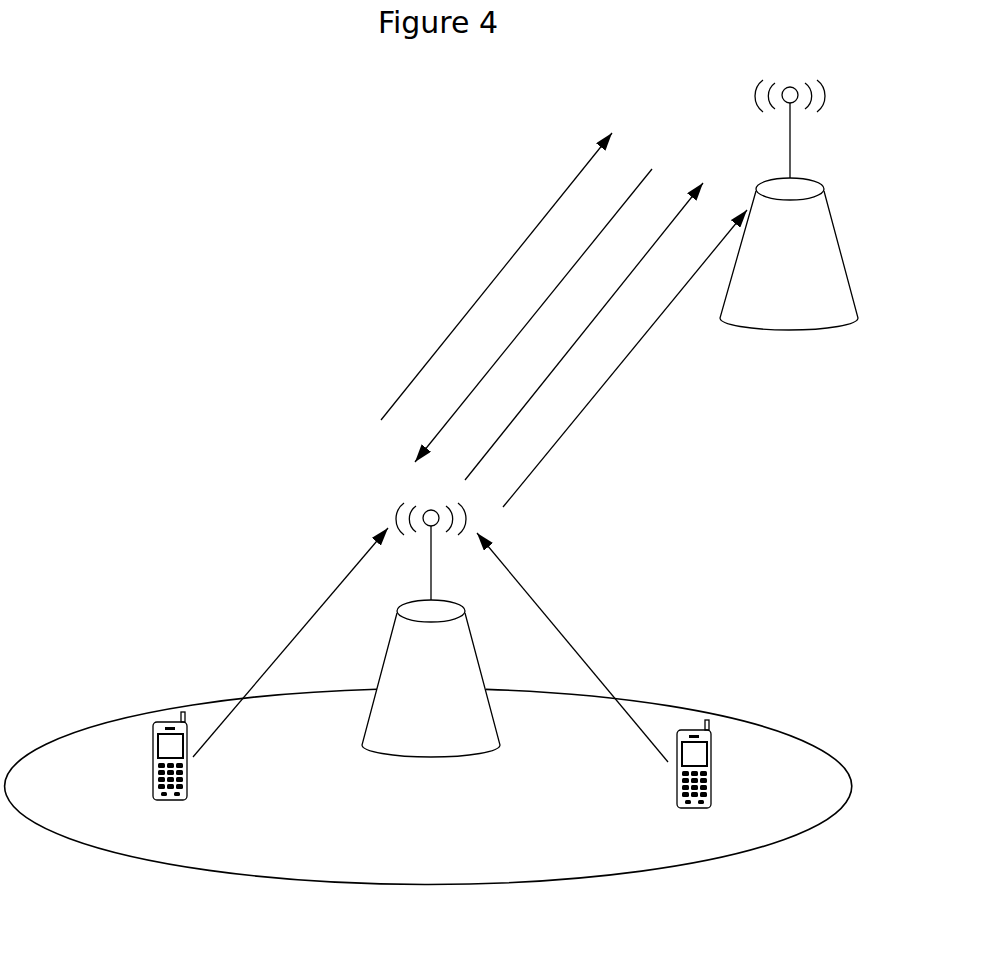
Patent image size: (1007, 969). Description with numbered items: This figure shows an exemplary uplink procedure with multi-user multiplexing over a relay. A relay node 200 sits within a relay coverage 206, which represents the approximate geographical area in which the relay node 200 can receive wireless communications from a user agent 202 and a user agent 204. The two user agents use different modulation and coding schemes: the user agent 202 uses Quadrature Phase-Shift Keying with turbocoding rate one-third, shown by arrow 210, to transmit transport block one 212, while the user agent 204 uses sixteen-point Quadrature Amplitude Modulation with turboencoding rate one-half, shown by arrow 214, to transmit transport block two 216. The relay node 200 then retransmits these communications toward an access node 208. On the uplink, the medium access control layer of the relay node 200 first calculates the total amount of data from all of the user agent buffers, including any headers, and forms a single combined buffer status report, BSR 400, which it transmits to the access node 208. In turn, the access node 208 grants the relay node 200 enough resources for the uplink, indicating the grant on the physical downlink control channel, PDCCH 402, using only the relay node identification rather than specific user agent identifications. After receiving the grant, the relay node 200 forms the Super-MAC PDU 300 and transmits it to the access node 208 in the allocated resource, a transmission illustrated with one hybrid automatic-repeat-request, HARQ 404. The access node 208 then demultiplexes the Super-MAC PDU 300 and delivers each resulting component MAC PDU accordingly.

The relay node 200 is at (430, 598).
The user agent 202 is at (189, 788).
The user agent 204 is at (712, 781).
The relay coverage 206 is at (436, 886).
The access node 208 is at (790, 176).
The arrow 210 is at (355, 563).
The transport block one (TB1) 212 is at (318, 643).
The arrow 214 is at (603, 677).
The transport block two (TB2) 216 is at (522, 632).
The Super-MAC PDU 300 is at (673, 205).
The buffer status report (BSR) 400 is at (577, 174).
The physical downlink control channel (PDCCH) 402 is at (643, 177).
The hybrid automatic-repeat-request (HARQ) 404 is at (648, 335).